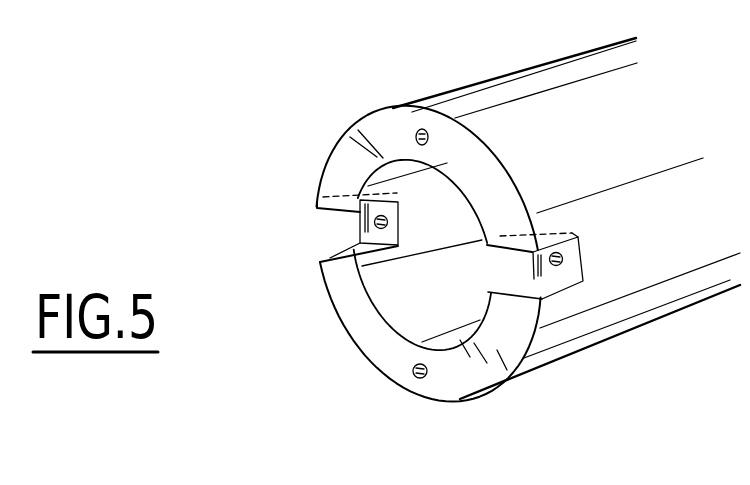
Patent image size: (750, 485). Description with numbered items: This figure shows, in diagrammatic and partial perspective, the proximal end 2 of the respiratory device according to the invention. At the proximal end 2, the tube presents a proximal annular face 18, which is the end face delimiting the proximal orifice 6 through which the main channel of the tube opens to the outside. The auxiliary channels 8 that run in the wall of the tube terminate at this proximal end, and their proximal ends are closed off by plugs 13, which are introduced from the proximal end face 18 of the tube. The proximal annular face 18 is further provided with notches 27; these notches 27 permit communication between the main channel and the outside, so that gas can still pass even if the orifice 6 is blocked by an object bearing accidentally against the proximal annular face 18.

The proximal end 2 is at (518, 50).
The proximal annular face 18 is at (384, 128).
The orifice 6 is at (441, 200).
The notches 27 is at (328, 216).
The auxiliary channels 8 is at (320, 262).
The plugs 13 is at (412, 372).